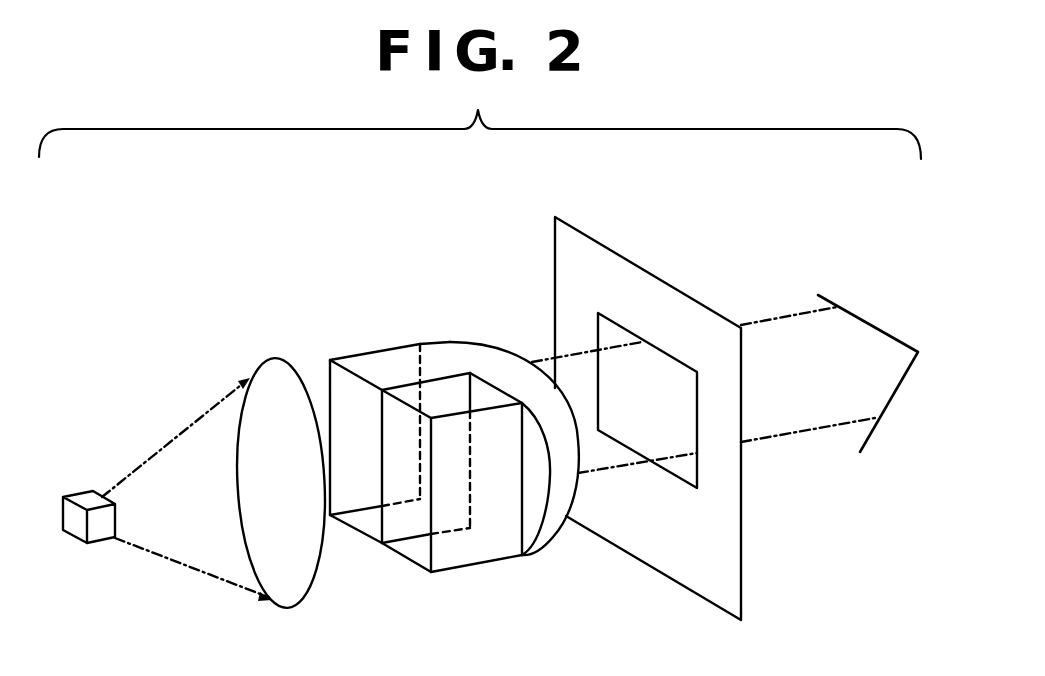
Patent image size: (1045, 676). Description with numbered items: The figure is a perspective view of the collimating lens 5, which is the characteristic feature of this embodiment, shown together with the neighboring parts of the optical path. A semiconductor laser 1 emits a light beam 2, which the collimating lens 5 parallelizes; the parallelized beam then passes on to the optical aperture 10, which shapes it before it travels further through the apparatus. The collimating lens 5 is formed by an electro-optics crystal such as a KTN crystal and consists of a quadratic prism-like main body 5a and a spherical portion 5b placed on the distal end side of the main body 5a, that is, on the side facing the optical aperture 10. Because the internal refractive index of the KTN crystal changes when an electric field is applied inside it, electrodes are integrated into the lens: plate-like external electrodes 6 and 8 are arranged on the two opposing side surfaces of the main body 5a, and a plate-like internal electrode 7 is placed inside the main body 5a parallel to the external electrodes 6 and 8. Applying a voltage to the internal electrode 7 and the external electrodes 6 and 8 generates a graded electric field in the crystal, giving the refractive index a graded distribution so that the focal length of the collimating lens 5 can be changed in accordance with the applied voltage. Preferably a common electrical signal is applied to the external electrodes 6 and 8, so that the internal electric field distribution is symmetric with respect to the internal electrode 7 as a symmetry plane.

The semiconductor laser 1 is at (88, 496).
The light beam 2 is at (194, 420).
The collimating lens 5 is at (454, 432).
The main body 5a is at (426, 451).
The spherical portion 5b is at (511, 348).
The external electrode 6 is at (364, 372).
The internal electrode 7 is at (400, 517).
The external electrode 8 is at (472, 553).
The optical aperture 10 is at (630, 280).